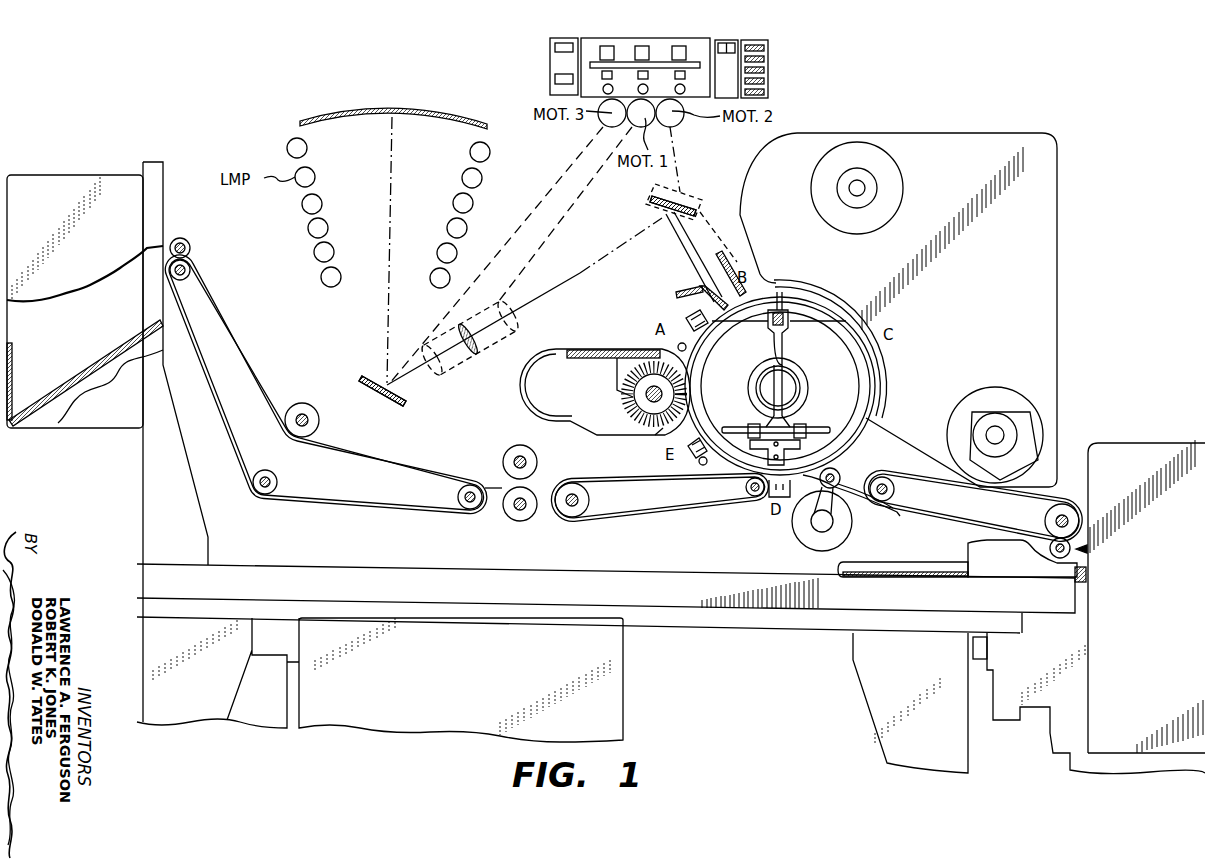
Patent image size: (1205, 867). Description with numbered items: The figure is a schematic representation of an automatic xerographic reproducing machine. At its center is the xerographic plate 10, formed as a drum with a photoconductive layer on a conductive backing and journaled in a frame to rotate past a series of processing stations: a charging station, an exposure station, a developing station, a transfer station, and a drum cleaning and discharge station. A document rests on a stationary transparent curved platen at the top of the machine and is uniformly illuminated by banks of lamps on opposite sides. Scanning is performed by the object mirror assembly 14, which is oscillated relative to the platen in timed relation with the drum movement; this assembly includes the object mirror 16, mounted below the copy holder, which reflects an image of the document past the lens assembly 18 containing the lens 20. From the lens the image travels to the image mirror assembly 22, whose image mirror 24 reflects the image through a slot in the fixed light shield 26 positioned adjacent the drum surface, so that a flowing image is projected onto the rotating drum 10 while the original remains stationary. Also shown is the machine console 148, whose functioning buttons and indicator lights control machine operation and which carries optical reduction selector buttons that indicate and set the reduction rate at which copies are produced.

The machine console 148 is at (548, 72).
The image mirror assembly 22 is at (728, 184).
The image mirror 24 is at (652, 199).
The fixed light shield 26 is at (702, 288).
The object mirror 16 is at (378, 382).
The object mirror assembly 14 is at (381, 393).
The lens 20 is at (478, 332).
The lens assembly 18 is at (477, 364).
The xerographic plate 10 is at (849, 435).